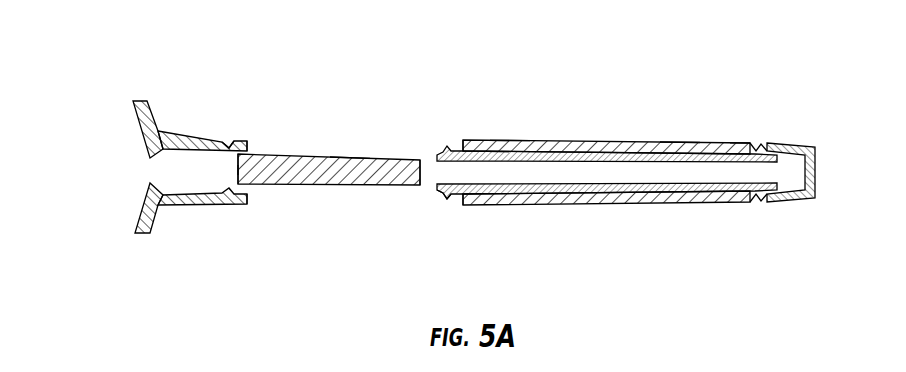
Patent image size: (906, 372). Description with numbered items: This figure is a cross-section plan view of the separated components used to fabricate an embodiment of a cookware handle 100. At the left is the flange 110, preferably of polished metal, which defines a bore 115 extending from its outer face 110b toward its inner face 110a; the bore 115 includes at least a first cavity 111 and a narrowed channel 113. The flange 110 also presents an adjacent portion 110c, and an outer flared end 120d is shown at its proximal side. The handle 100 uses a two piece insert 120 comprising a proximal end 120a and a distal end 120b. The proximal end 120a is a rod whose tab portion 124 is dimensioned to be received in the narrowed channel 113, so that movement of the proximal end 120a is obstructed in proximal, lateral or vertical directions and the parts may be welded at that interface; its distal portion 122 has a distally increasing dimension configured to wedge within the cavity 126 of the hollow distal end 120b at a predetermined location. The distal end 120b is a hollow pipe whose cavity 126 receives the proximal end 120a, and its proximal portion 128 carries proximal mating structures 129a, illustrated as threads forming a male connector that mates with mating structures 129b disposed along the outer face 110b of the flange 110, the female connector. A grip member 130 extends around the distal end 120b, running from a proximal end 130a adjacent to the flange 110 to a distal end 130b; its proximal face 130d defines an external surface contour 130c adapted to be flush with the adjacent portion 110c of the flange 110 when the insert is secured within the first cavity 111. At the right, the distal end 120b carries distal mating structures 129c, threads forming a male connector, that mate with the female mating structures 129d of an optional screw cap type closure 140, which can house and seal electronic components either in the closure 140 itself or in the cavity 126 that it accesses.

The handle 100 is at (467, 70).
The flange 110 is at (193, 156).
The inner face 110a is at (134, 118).
The outer face 110b is at (250, 150).
The adjacent portion 110c is at (248, 128).
The first cavity 111 is at (173, 149).
The narrowed channel 113 is at (242, 159).
The bore 115 is at (210, 158).
The insert 120 is at (250, 176).
The proximal end 120a is at (347, 154).
The distal end 120b is at (681, 132).
The inner member proximal end 120d is at (247, 168).
The distal portion 122 is at (400, 159).
The tab portion 124 is at (251, 178).
The cavity 126 is at (492, 166).
The proximal portion 128 is at (447, 146).
The proximal mating structures 129a is at (447, 201).
The mating structures 129b is at (245, 206).
The distal mating structures 129c is at (768, 143).
The mating structures 129d is at (758, 203).
The grip member 130 is at (610, 164).
The proximal end 130a is at (513, 135).
The distal end 130b is at (751, 132).
The external surface contour 130c is at (462, 140).
The proximal face 130d is at (455, 194).
The closure 140 is at (790, 201).